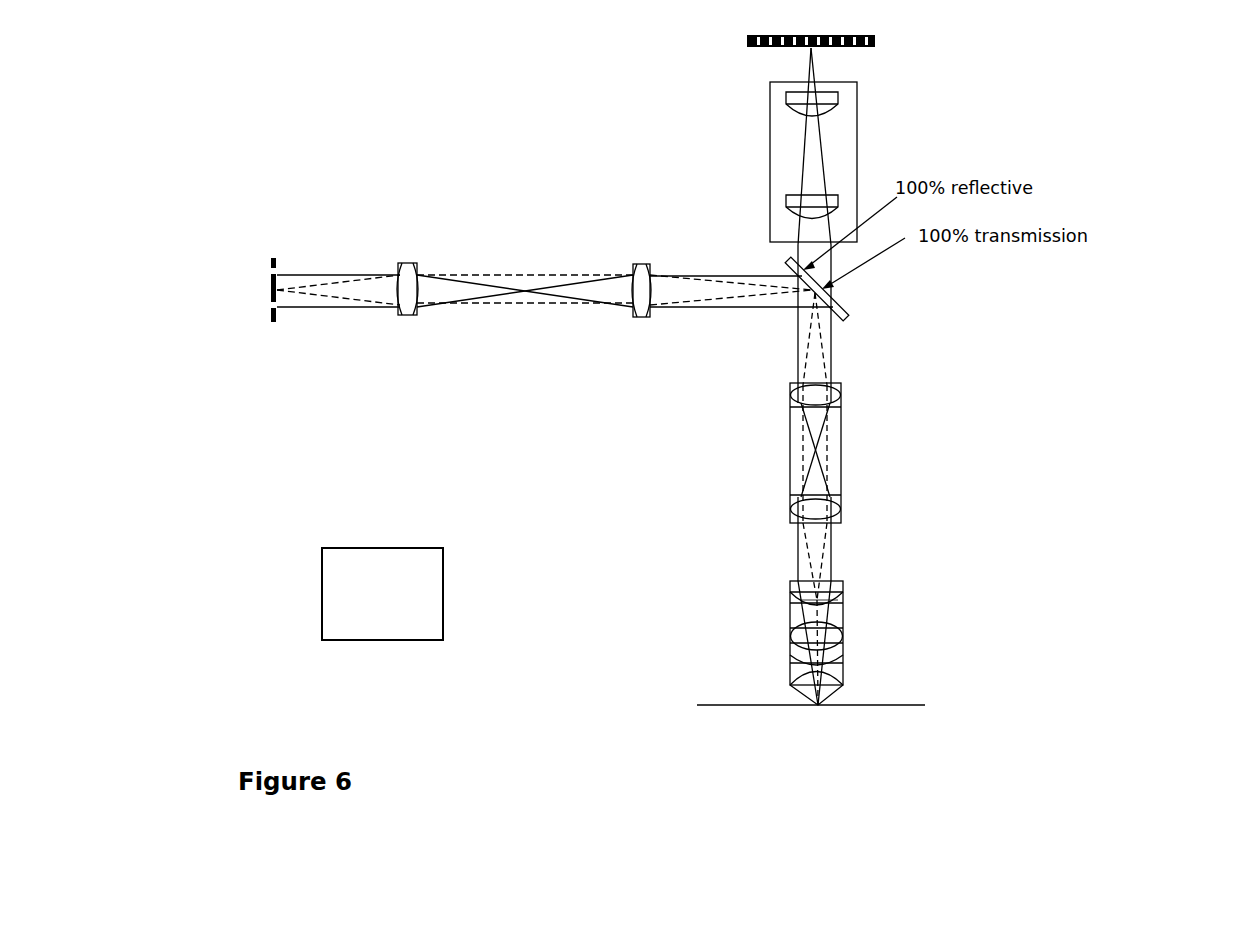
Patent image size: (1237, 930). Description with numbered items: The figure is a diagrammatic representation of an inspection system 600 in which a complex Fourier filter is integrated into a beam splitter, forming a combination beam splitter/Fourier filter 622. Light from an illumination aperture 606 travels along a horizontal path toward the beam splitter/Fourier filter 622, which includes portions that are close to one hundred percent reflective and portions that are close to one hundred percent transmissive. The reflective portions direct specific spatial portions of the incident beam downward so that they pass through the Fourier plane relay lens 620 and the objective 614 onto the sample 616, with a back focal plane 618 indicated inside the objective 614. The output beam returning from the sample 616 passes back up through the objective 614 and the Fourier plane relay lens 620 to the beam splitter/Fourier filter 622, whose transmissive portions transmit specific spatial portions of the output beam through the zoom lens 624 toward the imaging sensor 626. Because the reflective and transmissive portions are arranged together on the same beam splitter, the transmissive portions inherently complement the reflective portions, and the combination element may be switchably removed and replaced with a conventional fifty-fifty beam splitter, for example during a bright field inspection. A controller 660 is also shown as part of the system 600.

The inspection system 600 is at (524, 95).
The illumination aperture 606 is at (275, 258).
The objective 614 is at (843, 657).
The sample 616 is at (925, 705).
The back focal plane 618 is at (830, 600).
The Fourier plane relay lens 620 is at (841, 447).
The beam splitter/Fourier filter 622 is at (850, 312).
The zoom lens 624 is at (770, 188).
The imaging sensor 626 is at (879, 37).
The controller 660 is at (360, 548).